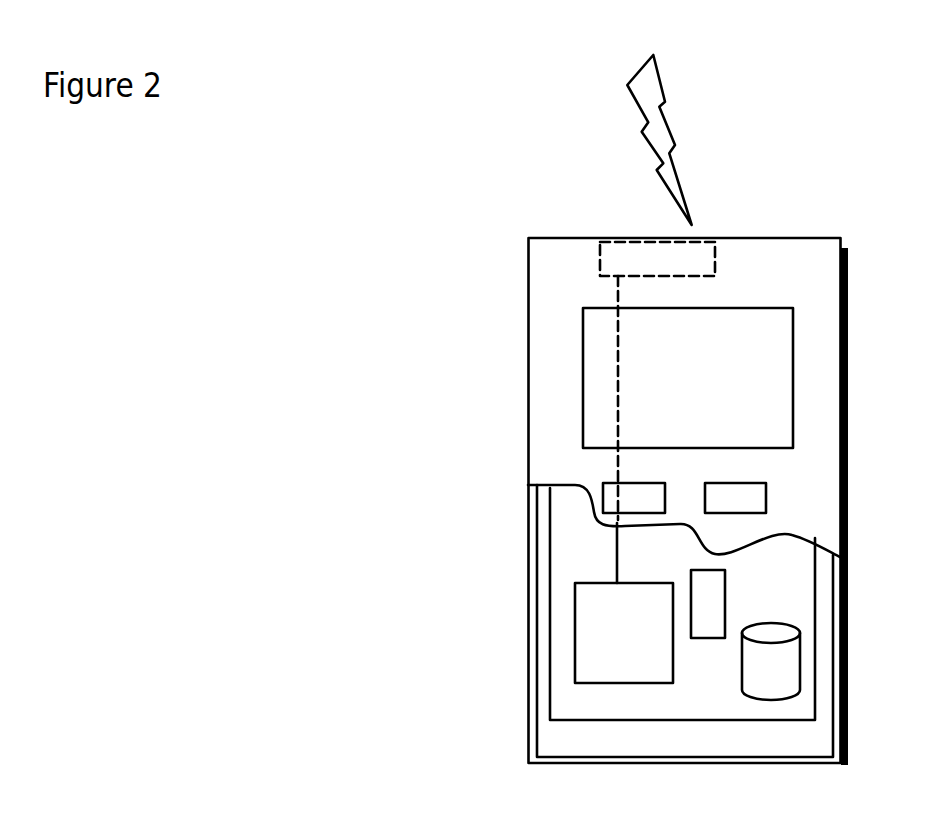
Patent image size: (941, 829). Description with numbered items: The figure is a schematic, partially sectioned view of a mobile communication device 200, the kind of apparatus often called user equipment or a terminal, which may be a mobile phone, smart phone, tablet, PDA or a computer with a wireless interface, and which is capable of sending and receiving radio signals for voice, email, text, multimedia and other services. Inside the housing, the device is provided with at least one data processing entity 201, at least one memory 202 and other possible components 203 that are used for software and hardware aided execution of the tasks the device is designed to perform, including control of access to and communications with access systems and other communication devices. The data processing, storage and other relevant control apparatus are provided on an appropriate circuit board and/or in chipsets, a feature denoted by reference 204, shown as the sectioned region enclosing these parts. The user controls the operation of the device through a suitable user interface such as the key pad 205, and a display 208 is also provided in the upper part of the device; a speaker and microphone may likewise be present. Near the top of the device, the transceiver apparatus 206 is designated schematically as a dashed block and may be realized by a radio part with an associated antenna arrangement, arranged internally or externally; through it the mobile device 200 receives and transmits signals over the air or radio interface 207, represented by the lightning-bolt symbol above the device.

The communication device 200 is at (532, 281).
The data processing entity 201 is at (583, 616).
The memory 202 is at (765, 675).
The other possible components 203 is at (708, 588).
The circuit board and/or chipsets 204 is at (575, 702).
The key pad 205 is at (608, 498).
The transceiver apparatus 206 is at (705, 252).
The air or radio interface 207 is at (694, 161).
The display 208 is at (598, 364).